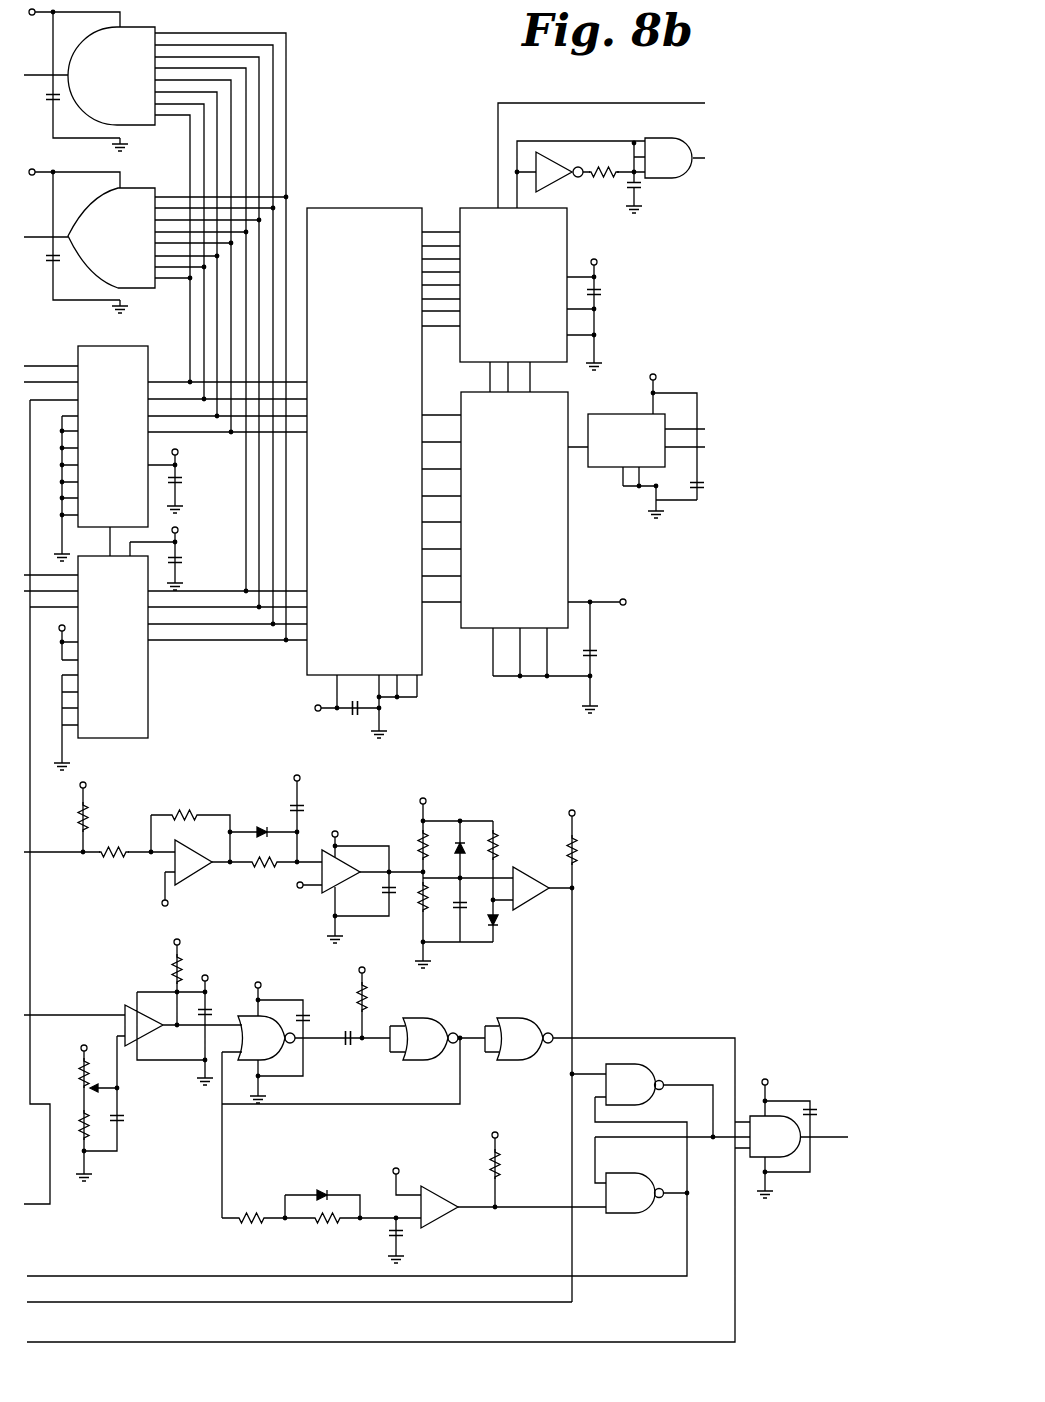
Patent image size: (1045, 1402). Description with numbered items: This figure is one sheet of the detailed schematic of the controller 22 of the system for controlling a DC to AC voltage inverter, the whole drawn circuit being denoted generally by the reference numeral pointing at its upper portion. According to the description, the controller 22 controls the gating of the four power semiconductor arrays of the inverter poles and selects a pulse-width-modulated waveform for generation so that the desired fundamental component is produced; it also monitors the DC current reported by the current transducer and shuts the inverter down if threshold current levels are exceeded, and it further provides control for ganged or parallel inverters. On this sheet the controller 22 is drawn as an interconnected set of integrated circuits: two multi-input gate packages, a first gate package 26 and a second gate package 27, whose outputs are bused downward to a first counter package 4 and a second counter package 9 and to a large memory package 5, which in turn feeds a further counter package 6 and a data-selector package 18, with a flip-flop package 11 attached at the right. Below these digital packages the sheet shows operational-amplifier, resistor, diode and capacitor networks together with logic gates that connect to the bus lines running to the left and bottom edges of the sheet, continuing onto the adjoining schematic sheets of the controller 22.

The controller 22 is at (348, 118).
The U26 CD4068 8-input NAND gate 26 is at (111, 76).
The U27 CD4078 8-input NOR gate 27 is at (111, 238).
The U4 MC14516 up/down counter 4 is at (113, 436).
The U9 MC14516 up/down counter 9 is at (113, 647).
The U5 27512 EPROM 5 is at (364, 441).
The U6 MC14040 binary counter 6 is at (513, 285).
The U18 CD4512 data selector 18 is at (514, 510).
The U11 CD4013 flip-flop 11 is at (626, 440).